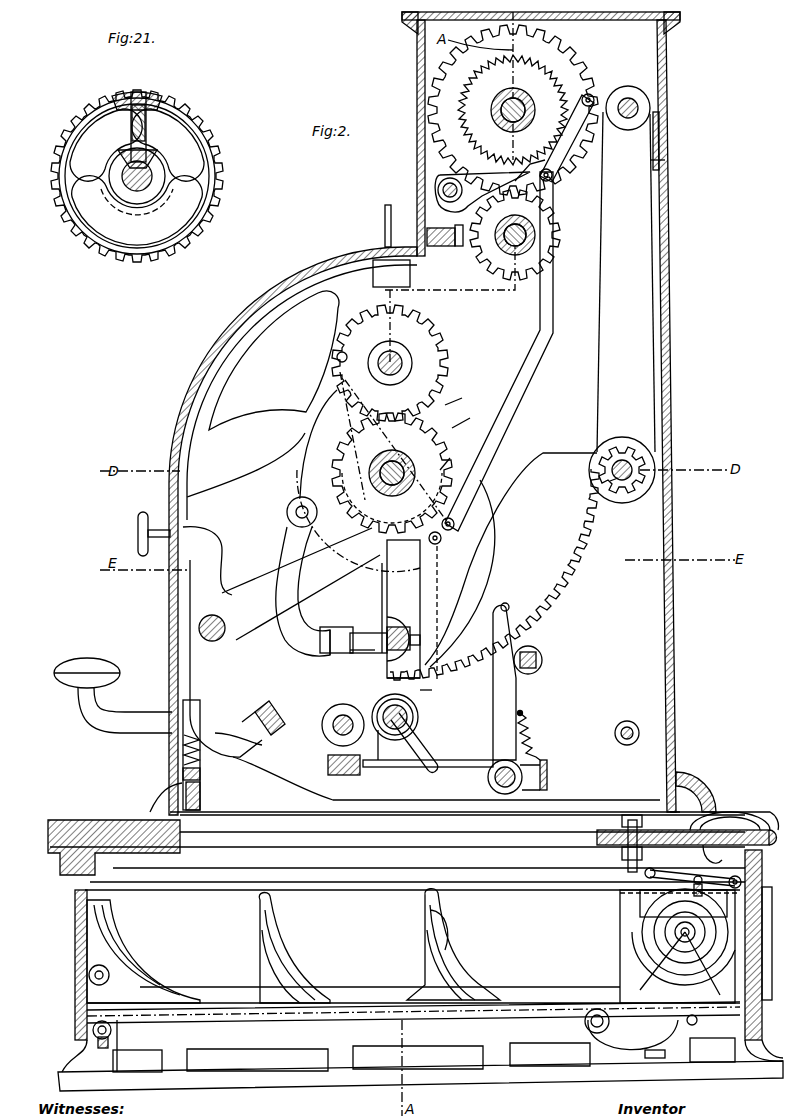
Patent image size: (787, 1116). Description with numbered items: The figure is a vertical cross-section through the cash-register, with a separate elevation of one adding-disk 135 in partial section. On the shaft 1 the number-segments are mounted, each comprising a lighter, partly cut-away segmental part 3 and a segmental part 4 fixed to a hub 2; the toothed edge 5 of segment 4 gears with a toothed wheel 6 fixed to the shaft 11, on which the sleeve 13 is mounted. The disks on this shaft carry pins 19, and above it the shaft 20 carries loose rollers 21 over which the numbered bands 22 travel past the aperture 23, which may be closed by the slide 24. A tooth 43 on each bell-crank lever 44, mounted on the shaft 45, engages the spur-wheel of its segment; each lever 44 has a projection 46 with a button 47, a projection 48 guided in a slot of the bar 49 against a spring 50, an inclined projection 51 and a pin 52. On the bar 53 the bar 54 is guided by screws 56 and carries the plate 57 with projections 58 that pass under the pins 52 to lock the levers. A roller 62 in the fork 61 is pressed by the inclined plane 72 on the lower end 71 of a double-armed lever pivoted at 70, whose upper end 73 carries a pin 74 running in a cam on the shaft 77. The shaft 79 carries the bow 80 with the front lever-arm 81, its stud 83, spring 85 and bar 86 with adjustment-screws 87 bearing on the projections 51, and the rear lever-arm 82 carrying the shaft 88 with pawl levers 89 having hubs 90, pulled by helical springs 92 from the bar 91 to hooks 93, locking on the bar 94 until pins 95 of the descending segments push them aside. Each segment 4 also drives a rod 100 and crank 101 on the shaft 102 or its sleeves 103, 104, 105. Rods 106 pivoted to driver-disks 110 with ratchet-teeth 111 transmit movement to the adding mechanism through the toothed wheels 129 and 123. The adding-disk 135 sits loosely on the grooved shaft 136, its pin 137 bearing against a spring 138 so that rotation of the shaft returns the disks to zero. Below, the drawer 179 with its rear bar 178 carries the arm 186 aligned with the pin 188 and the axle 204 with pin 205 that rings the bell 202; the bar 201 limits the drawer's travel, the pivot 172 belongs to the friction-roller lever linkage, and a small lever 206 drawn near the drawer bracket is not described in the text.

In FIG. 2, the shaft 1 is at (400, 475).
In FIG. 2, the hub 2 is at (374, 492).
In FIG. 2, the segmental part 3 is at (248, 345).
In FIG. 2, the segmental part 4 is at (511, 560).
In FIG. 2, the toothed edge 5 is at (494, 574).
In FIG. 2, the toothed wheel 6 is at (626, 480).
In FIG. 2, the shaft 11 is at (626, 456).
In FIG. 2, the sleeve 13 is at (614, 484).
In FIG. 2, the pin 19 is at (606, 440).
In FIG. 2, the shaft 20 is at (628, 98).
In FIG. 2, the roller 21 is at (651, 106).
In FIG. 2, the band 22 is at (600, 238).
In FIG. 2, the aperture 23 is at (668, 158).
In FIG. 2, the slide 24 is at (660, 130).
In FIG. 2, the tooth 43 is at (428, 542).
In FIG. 2, the bell-crank lever 44 is at (240, 626).
In FIG. 2, the shaft 45 is at (220, 638).
In FIG. 2, the projection 46 is at (205, 542).
In FIG. 2, the button 47 is at (136, 530).
In FIG. 2, the projection 48 is at (206, 790).
In FIG. 2, the bar 49 is at (183, 774).
In FIG. 2, the spring 50 is at (170, 790).
In FIG. 2, the inclined projection 51 is at (258, 750).
In FIG. 2, the pin 52 is at (376, 564).
In FIG. 2, the bar 53 is at (408, 645).
In FIG. 2, the bar 54 is at (388, 640).
In FIG. 2, the screw 56 is at (360, 656).
In FIG. 2, the plate 57 is at (384, 600).
In FIG. 2, the projection 58 is at (382, 579).
In FIG. 2, the fork 61 is at (338, 656).
In FIG. 2, the roller 62 is at (356, 636).
In FIG. 2, the pivot 70 is at (300, 510).
In FIG. 2, the lower end 71 is at (304, 648).
In FIG. 2, the inclined plane 72 is at (330, 632).
In FIG. 2, the upper end 73 is at (374, 447).
In FIG. 2, the pin 74 is at (337, 355).
In FIG. 2, the shaft 77 is at (405, 352).
In FIG. 2, the shaft 79 is at (334, 716).
In FIG. 2, the bow 80 is at (360, 772).
In FIG. 2, the lever-arm 81 is at (118, 718).
In FIG. 2, the lever-arm 82 is at (438, 770).
In FIG. 2, the stud 83 is at (94, 662).
In FIG. 2, the spring 85 is at (183, 748).
In FIG. 2, the bar 86 is at (272, 706).
In FIG. 2, the adjustment-screw 87 is at (270, 738).
In FIG. 2, the shaft 88 is at (500, 793).
In FIG. 2, the lever 89 is at (494, 682).
In FIG. 2, the hub 90 is at (522, 790).
In FIG. 2, the bar 91 is at (548, 770).
In FIG. 2, the helical spring 92 is at (536, 745).
In FIG. 2, the hook 93 is at (523, 713).
In FIG. 2, the bar 94 is at (542, 660).
In FIG. 2, the pin 95 is at (514, 601).
In FIG. 2, the rod 100 is at (425, 692).
In FIG. 2, the crank 101 is at (403, 742).
In FIG. 2, the shaft 102 is at (404, 712).
In FIG. 2, the sleeve 103 is at (407, 717).
In FIG. 2, the sleeve 104 is at (390, 680).
In FIG. 2, the sleeve 105 is at (376, 710).
In FIG. 2, the rod 106 is at (553, 303).
In FIG. 2, the driver-disk 110 is at (474, 415).
In FIG. 2, the ratchet-teeth 111 is at (467, 392).
In FIG. 2, the toothed wheel 123 is at (438, 350).
In FIG. 2, the toothed wheel 129 is at (458, 455).
In FIG. 21, the adding-disk 135 is at (66, 223).
In FIG. 2, the adding-disk 135 is at (572, 52).
In FIG. 21, the shaft 136 is at (135, 195).
In FIG. 2, the shaft 136 is at (515, 128).
In FIG. 21, the pin 137 is at (122, 121).
In FIG. 21, the spring 138 is at (150, 97).
In FIG. 2, the pivot 172 is at (630, 722).
In FIG. 2, the rear bar 178 is at (640, 934).
In FIG. 2, the drawer 179 is at (440, 920).
In FIG. 2, the arm 186 is at (660, 893).
In FIG. 2, the pin 188 is at (628, 862).
In FIG. 2, the bar 201 is at (70, 872).
In FIG. 2, the bell 202 is at (631, 1033).
In FIG. 2, the movable axle 204 is at (696, 1022).
In FIG. 2, the pin 205 is at (736, 956).
In FIG. 2, the lever 206 is at (672, 876).